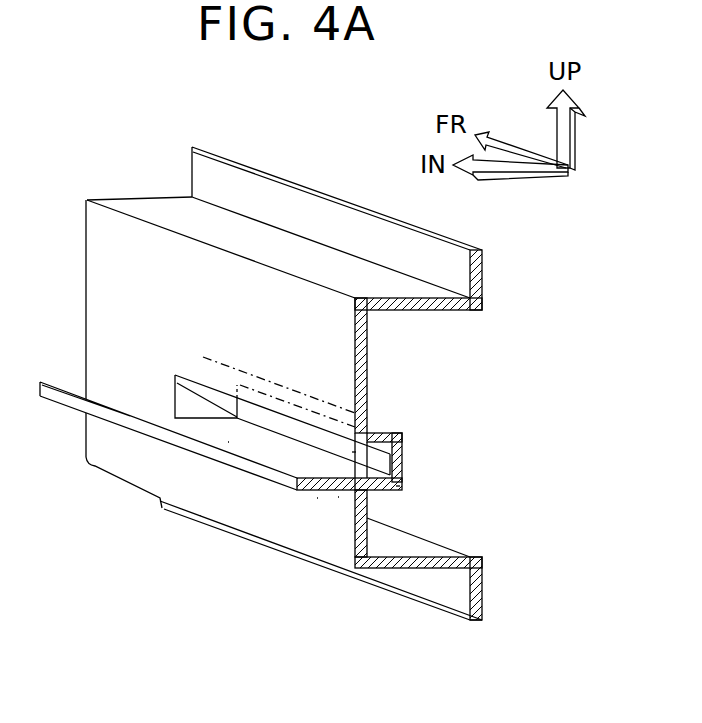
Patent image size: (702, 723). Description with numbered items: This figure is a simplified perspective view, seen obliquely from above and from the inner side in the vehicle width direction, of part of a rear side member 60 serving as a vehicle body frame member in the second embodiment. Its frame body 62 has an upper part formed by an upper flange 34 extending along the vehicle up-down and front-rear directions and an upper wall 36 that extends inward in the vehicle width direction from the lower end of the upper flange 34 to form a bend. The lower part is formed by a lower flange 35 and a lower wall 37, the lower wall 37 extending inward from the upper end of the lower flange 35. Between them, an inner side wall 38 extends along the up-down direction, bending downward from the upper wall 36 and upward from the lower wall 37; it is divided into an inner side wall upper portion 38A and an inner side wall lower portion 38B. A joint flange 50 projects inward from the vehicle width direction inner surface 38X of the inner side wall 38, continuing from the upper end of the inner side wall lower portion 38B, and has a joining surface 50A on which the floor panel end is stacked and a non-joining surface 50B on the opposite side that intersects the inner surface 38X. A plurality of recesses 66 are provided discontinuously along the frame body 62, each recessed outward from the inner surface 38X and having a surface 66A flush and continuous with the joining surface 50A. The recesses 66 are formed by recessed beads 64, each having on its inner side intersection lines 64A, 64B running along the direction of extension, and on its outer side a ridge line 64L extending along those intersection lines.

The rear side member 60 is at (349, 132).
The frame body 62 is at (301, 168).
The upper flange 34 is at (238, 180).
The upper wall 36 is at (153, 208).
The inner side wall 38 is at (112, 256).
The inner side wall upper portion 38A is at (298, 313).
The inner side wall lower portion 38B is at (240, 538).
The vehicle width direction inner surface 38X is at (260, 530).
The lower wall 37 is at (398, 568).
The lower flange 35 is at (447, 590).
The recessed bead 64 is at (278, 430).
The intersection line 64A is at (175, 382).
The intersection line 64B is at (233, 423).
The ridge line 64L is at (396, 430).
The recess 66 is at (372, 458).
The surface 66A is at (396, 489).
The joint flange 50 is at (338, 497).
The joining surface 50A is at (226, 440).
The non-joining surface 50B is at (317, 500).